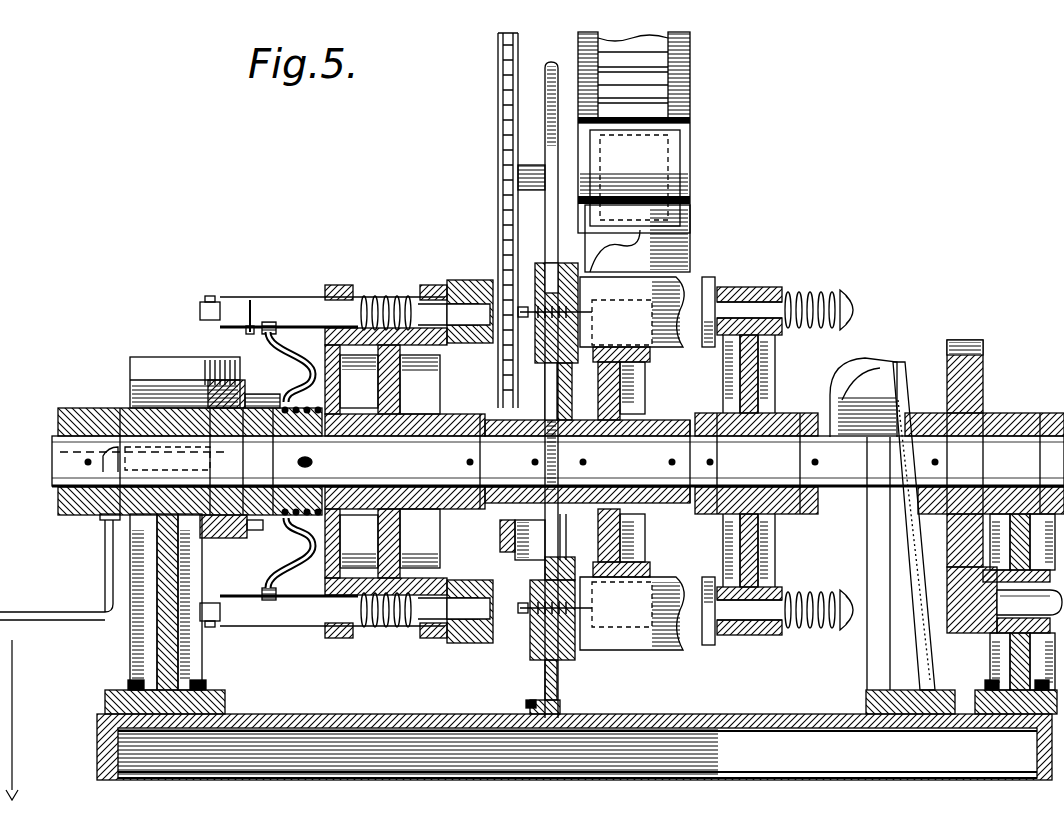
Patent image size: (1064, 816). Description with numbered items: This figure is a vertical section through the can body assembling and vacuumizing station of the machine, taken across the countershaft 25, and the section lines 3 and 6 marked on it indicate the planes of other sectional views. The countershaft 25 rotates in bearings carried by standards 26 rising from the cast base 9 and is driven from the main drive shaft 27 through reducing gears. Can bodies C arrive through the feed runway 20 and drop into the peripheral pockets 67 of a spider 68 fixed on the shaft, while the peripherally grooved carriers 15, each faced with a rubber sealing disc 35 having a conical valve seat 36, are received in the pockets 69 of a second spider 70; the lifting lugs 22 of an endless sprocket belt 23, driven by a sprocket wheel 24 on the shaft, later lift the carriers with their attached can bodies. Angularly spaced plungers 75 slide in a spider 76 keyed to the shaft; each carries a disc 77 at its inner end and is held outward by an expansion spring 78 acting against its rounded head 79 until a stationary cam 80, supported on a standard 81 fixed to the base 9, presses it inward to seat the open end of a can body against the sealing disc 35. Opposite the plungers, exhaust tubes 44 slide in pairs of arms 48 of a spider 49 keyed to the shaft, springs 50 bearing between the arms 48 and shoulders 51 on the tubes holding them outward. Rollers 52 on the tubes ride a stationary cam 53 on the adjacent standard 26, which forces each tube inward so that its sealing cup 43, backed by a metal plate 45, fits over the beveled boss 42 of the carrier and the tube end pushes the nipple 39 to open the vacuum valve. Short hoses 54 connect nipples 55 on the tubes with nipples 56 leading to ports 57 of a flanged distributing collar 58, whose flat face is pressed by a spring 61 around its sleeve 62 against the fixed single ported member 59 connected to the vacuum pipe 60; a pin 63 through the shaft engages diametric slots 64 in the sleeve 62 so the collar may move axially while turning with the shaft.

The section line 3- 3 is at (545, 808).
The section line 6- 6 is at (306, 791).
The cast base 9 is at (430, 728).
The carrier 15 is at (568, 235).
The feed runway 20 is at (690, 176).
The can body C is at (690, 210).
The lifting lug 22 is at (520, 178).
The endless sprocket belt 23 is at (498, 94).
The sprocket wheel 24 is at (500, 538).
The countershaft 25 is at (992, 455).
The standard 26 is at (130, 656).
The main drive shaft 27 is at (975, 600).
The sealing disc 35 is at (598, 228).
The conical valve seat 36 is at (632, 463).
The nipple 39 is at (535, 290).
The central boss 42 is at (545, 365).
The sealing cup 43 is at (468, 280).
The exhaust tube 44 is at (442, 292).
The metal plate 45 is at (442, 345).
The arm 48 is at (340, 638).
The spider 49 is at (440, 400).
The spring 50 is at (396, 296).
The shoulder 51 is at (340, 290).
The roller 52 is at (205, 302).
The stationary cam 53 is at (225, 380).
The hose 54 is at (316, 372).
The nipple 55 is at (276, 330).
The nipple 56 is at (252, 300).
The port 57 is at (262, 394).
The flanged distributing collar 58 is at (231, 538).
The single ported member 59 is at (130, 398).
The vacuum pipe 60 is at (105, 578).
The spring 61 is at (324, 410).
The sleeve 62 is at (326, 486).
The pin 63 is at (372, 480).
The diametric slot 64 is at (300, 452).
The peripheral pocket 67 is at (646, 642).
The spider 68 is at (630, 412).
The pocket 69 is at (576, 363).
The spider 70 is at (563, 518).
The plunger 75 is at (755, 302).
The spider 76 is at (760, 372).
The disc 77 is at (708, 277).
The expansion spring 78 is at (818, 292).
The rounded head 79 is at (856, 296).
The stationary cam 80 is at (880, 360).
The standard 81 is at (867, 658).